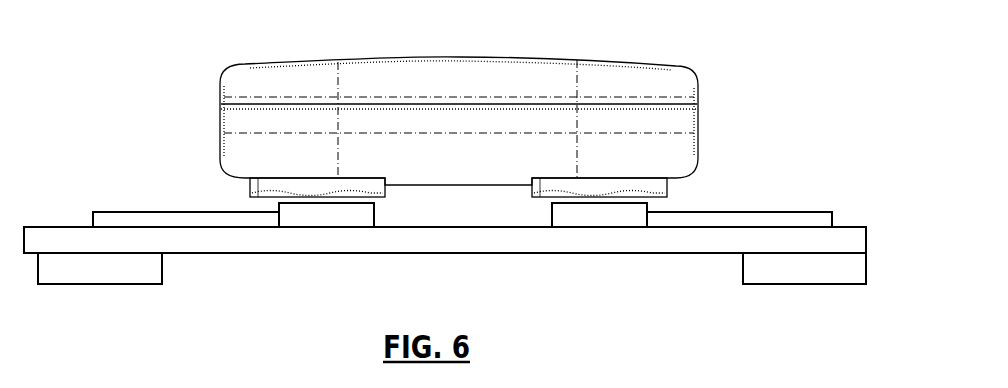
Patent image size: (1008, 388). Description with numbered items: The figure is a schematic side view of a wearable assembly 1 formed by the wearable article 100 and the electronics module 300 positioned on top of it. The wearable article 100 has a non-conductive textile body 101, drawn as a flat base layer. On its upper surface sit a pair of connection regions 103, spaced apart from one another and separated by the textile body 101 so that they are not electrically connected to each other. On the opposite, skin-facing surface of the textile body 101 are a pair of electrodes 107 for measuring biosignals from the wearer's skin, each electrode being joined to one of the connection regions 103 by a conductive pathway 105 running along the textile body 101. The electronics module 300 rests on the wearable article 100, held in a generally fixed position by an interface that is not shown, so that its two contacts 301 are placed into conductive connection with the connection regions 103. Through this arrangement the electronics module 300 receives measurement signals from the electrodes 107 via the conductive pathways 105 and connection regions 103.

The wearable assembly 1 is at (764, 32).
The wearable article 100 is at (640, 275).
The textile body 101 is at (842, 240).
The connection regions 103 is at (314, 217).
The conductive pathway 105 is at (153, 211).
The electrodes 107 is at (87, 276).
The electronics module 300 is at (614, 58).
The contacts 301 is at (530, 197).